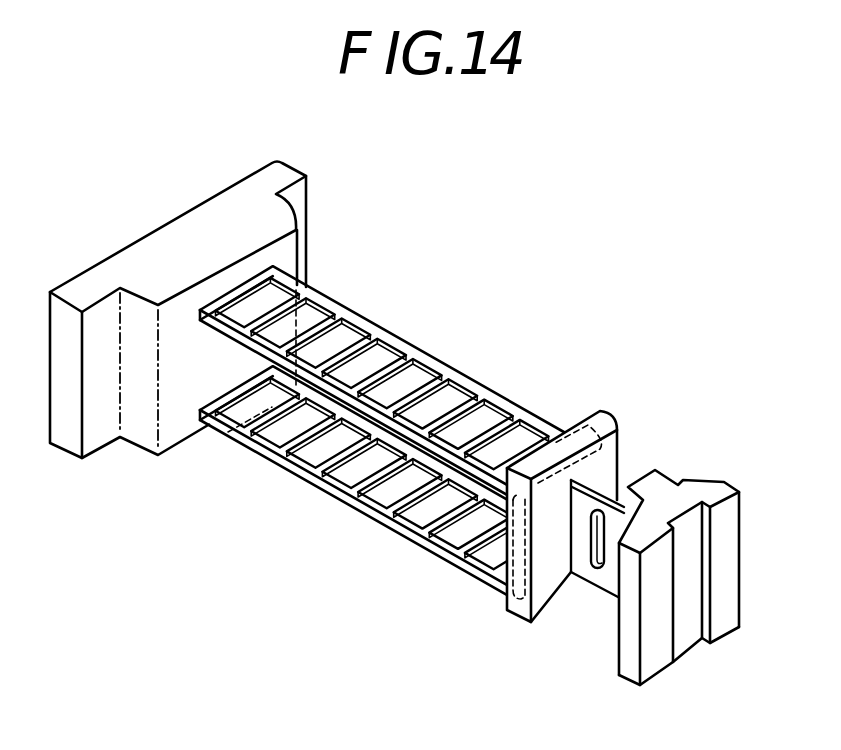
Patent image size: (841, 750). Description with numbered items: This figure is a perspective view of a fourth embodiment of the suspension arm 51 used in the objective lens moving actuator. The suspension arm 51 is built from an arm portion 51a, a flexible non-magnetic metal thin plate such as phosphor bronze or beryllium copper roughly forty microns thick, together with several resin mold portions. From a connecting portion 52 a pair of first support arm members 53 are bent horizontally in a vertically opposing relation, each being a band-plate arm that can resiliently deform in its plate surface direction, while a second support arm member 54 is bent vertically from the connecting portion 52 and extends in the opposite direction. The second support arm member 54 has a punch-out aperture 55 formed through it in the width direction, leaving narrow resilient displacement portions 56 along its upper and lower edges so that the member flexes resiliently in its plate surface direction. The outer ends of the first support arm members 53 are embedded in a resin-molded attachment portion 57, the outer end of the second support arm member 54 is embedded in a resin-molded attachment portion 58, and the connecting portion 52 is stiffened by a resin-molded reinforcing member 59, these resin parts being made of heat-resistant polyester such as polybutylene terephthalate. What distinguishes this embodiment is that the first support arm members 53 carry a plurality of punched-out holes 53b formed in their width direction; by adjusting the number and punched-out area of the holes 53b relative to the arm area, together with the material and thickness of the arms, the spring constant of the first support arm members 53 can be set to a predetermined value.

The suspension arm 51 is at (449, 326).
The arm portion 51a is at (473, 381).
The connecting portion 52 is at (477, 583).
The first support arm members 53 is at (370, 338).
The punched-out holes 53b is at (385, 336).
The second support arm member 54 is at (613, 585).
The punch-out aperture 55 is at (592, 584).
The resilient displacement portions 56 is at (607, 466).
The attachment portion 57 is at (196, 226).
The attachment portion 58 is at (726, 592).
The reinforcing member 59 is at (587, 427).